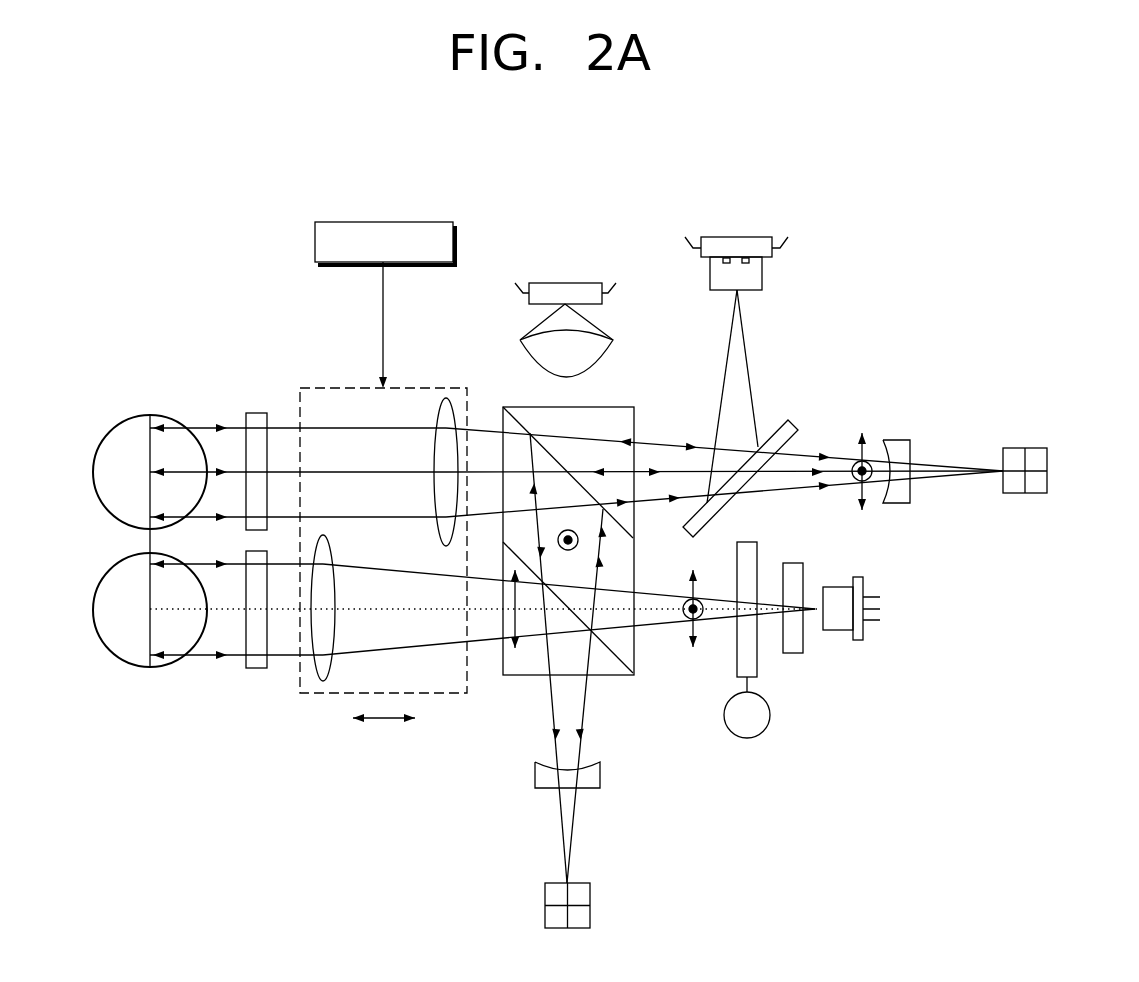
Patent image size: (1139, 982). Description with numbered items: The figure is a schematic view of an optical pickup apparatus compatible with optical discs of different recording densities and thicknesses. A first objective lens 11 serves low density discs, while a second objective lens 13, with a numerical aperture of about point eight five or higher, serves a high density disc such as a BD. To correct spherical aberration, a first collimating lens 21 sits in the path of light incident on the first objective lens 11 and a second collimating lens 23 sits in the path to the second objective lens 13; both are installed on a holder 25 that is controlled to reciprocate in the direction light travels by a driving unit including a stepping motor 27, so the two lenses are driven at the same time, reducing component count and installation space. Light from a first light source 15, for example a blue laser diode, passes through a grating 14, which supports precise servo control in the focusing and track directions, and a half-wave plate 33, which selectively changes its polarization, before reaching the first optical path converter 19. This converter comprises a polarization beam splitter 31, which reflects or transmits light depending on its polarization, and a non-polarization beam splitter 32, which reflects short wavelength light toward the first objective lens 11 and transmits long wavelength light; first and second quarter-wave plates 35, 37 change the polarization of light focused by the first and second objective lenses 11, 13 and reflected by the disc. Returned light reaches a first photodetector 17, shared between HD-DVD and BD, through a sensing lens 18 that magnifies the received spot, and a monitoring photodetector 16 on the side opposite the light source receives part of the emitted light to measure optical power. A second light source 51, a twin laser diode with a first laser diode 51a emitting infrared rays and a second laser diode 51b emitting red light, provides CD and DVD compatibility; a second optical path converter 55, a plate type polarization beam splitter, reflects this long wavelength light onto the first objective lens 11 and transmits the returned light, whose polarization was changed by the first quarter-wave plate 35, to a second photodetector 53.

The first objective lens 11 is at (100, 433).
The second objective lens 13 is at (108, 655).
The grating 14 is at (800, 643).
The first light source 15 is at (880, 609).
The monitoring photodetector 16 is at (598, 283).
The first photodetector 17 is at (590, 905).
The sensing lens 18 is at (600, 775).
The first optical path converter 19 is at (618, 692).
The first collimating lens 21 is at (446, 398).
The second collimating lens 23 is at (303, 668).
The holder 25 is at (325, 693).
The stepping motor 27 is at (383, 222).
The polarization beam splitter 31 is at (622, 660).
The non-polarization beam splitter 32 is at (548, 450).
The half-wave plate 33 is at (757, 667).
The first quarter-wave plate 35 is at (257, 413).
The second quarter-wave plate 37 is at (240, 666).
The second light source 51 is at (765, 237).
The first laser diode 51a is at (727, 263).
The second laser diode 51b is at (745, 263).
The second photodetector 53 is at (1047, 472).
The second optical path converter 55 is at (793, 425).